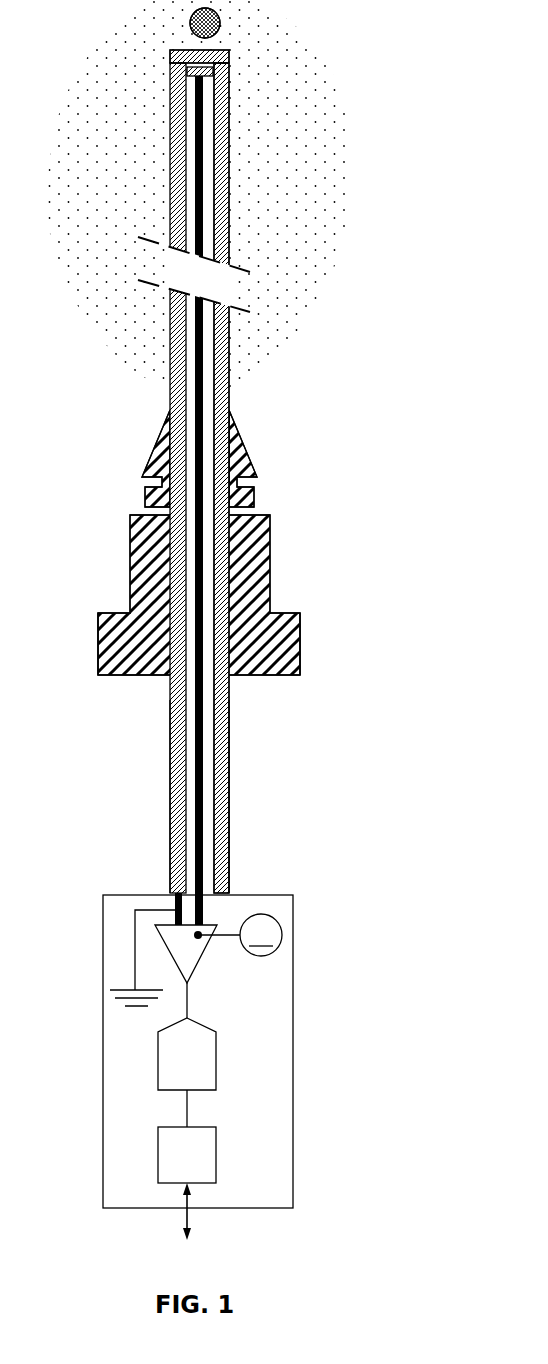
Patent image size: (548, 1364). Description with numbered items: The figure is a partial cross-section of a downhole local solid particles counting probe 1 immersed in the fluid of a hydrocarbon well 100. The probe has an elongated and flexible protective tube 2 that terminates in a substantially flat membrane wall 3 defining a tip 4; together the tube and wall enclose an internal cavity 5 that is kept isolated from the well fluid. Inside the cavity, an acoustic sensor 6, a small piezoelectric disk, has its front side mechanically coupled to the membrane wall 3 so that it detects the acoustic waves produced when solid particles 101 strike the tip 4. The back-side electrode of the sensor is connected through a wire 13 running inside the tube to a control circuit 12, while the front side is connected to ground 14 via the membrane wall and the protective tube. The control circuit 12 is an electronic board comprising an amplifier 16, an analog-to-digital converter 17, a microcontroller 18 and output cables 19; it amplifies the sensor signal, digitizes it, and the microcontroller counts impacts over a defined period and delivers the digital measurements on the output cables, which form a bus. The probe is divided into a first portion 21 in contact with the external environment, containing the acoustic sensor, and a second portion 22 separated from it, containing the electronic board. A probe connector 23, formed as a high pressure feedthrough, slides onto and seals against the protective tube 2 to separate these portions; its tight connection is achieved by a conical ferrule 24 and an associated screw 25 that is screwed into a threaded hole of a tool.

The downhole local solid particles counting probe 1 is at (60, 373).
The elongated and flexible protective tube 2 is at (228, 362).
The membrane wall 3 is at (230, 53).
The tip 4 is at (160, 58).
The internal cavity 5 is at (214, 232).
The acoustic sensor 6 is at (226, 72).
The control circuit 12 is at (209, 1051).
The wire 13 is at (196, 158).
The ground 14 is at (135, 970).
The amplifier 16 is at (190, 960).
The analog-to-digital converter 17 is at (206, 1078).
The microcontroller 18 is at (203, 1170).
The output cables 19 is at (183, 1217).
The first portion 21 is at (365, 302).
The second portion 22 is at (377, 855).
The probe connector 23 is at (343, 538).
The conical ferrule 24 is at (242, 463).
The screw 25 is at (299, 655).
The hydrocarbon well 100 is at (227, 487).
The solid particles 101 is at (192, 10).